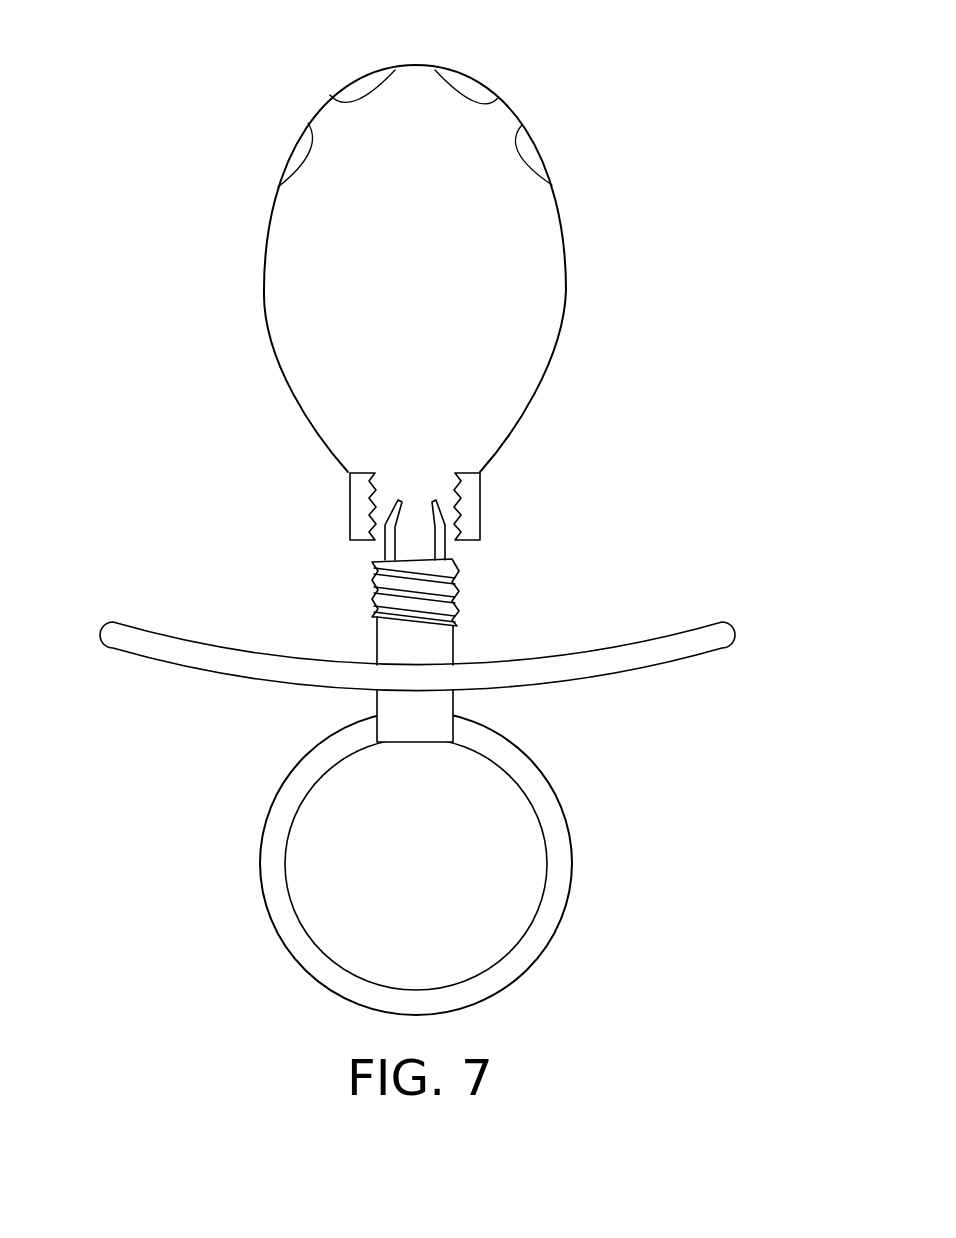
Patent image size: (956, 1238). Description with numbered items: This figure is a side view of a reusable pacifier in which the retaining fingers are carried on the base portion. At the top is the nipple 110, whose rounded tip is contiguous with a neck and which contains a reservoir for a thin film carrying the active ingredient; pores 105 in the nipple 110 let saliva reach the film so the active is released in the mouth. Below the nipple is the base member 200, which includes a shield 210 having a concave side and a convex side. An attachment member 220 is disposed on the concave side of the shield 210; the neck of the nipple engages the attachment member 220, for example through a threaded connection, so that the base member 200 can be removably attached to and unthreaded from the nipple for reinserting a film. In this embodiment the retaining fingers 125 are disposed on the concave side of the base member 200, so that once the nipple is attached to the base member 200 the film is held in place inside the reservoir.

The pores 105 is at (457, 80).
The nipple 110 is at (264, 291).
The retaining fingers 125 is at (438, 513).
The base member 200 is at (470, 789).
The shield 210 is at (176, 664).
The attachment member 220 is at (372, 580).